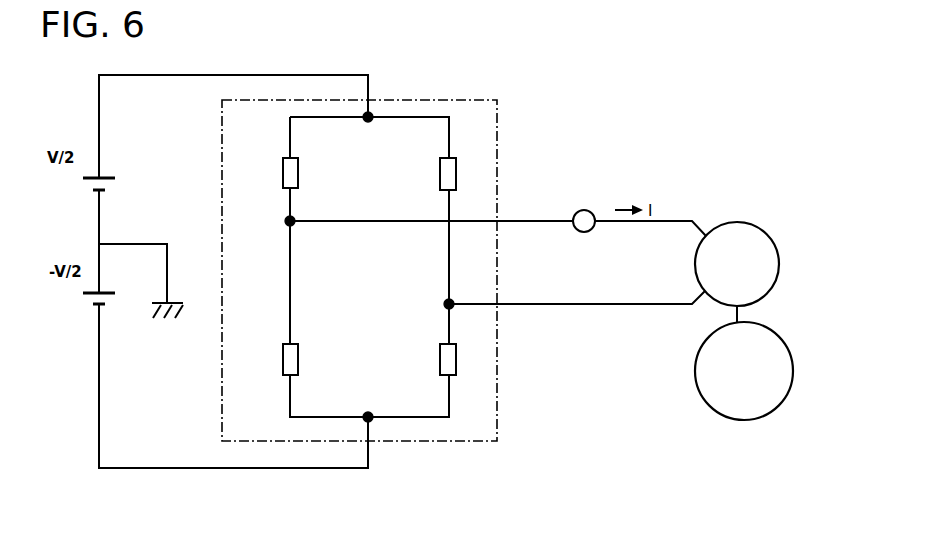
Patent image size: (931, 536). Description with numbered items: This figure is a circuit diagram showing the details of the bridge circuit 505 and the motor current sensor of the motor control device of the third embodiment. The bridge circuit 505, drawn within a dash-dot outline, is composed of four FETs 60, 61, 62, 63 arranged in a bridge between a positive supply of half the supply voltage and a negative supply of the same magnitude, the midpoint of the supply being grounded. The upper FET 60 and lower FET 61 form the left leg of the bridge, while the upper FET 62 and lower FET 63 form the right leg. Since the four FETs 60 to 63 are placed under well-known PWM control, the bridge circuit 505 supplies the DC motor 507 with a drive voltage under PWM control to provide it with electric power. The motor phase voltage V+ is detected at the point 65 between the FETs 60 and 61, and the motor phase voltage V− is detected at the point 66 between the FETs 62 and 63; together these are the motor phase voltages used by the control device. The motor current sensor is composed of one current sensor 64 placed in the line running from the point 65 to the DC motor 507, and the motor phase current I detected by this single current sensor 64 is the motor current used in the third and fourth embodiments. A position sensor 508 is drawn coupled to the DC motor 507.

The bridge circuit 505 is at (472, 110).
The FET 60 is at (285, 173).
The FET 61 is at (286, 360).
The FET 62 is at (442, 173).
The FET 63 is at (442, 360).
The current sensor 64 is at (579, 217).
The point 65 is at (293, 224).
The point 66 is at (447, 302).
The DC motor 507 is at (772, 252).
The position sensor 508 is at (787, 341).